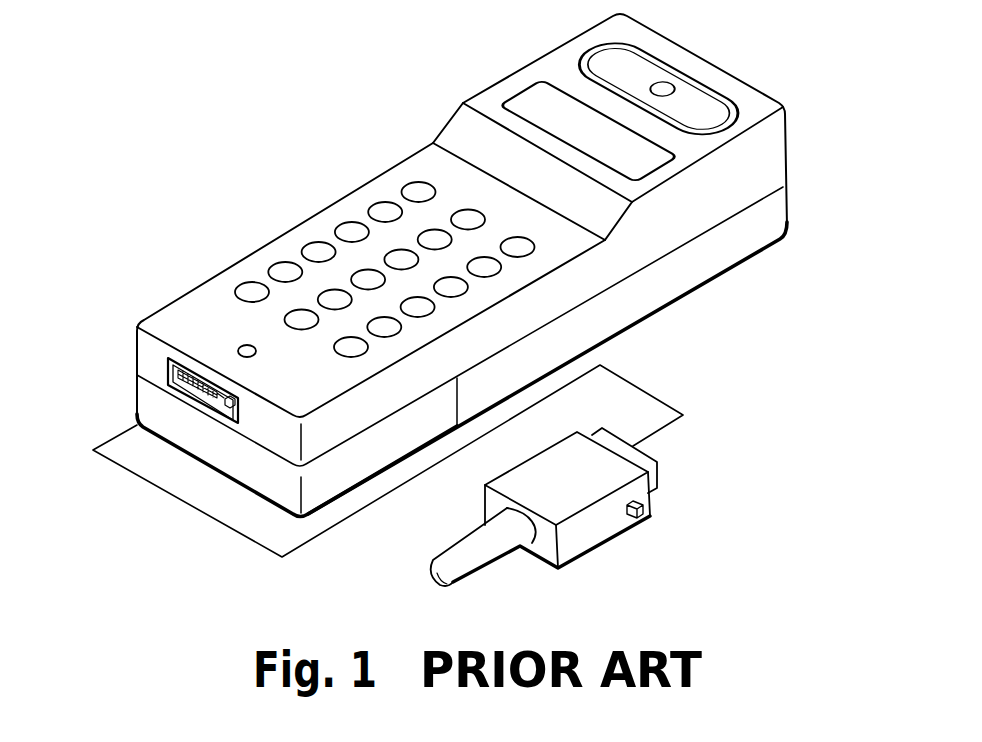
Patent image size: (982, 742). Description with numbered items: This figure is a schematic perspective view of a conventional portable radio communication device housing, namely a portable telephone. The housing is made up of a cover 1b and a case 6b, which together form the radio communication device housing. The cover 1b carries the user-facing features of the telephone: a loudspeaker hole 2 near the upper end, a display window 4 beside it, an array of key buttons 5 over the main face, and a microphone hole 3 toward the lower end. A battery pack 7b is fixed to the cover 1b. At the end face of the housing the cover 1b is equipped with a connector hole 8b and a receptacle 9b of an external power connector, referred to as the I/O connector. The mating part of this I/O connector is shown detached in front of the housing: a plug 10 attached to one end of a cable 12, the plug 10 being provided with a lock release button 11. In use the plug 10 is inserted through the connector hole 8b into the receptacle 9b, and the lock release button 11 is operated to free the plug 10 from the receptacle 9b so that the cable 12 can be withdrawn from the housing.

The cover 1b is at (788, 162).
The loudspeaker hole 2 is at (667, 82).
The microphone hole 3 is at (247, 344).
The display window 4 is at (514, 91).
The key buttons 5 is at (352, 222).
The case 6b is at (768, 257).
The battery pack 7b is at (137, 387).
The connector hole 8b is at (223, 417).
The receptacle 9b is at (163, 414).
The plug 10 is at (623, 527).
The lock release button 11 is at (646, 511).
The cable 12 is at (470, 578).